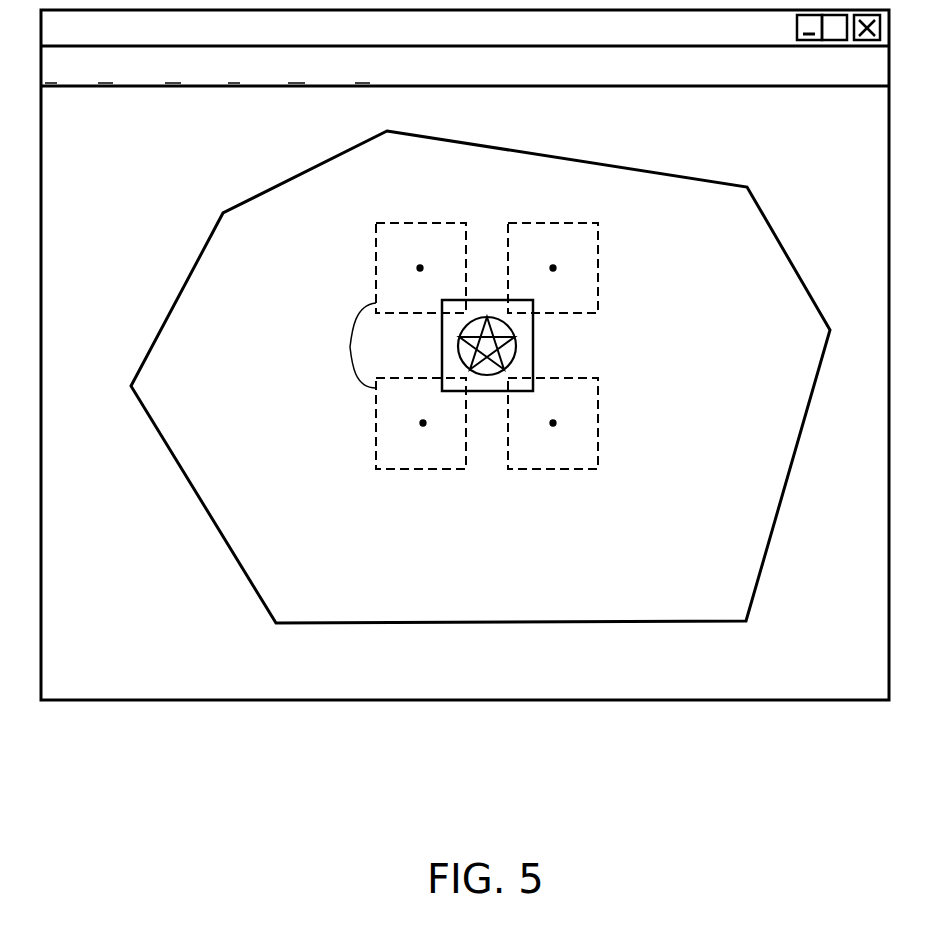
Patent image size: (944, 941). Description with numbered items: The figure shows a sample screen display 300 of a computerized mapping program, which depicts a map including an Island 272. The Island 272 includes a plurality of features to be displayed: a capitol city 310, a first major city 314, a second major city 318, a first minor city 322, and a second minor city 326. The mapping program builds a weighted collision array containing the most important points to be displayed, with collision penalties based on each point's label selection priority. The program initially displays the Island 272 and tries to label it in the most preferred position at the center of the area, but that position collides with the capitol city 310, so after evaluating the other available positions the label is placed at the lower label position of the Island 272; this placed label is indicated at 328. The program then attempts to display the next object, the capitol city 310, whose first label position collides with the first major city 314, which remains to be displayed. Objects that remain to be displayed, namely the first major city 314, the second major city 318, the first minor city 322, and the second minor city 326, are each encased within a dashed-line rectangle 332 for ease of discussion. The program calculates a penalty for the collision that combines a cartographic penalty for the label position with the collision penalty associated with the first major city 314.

The screen display 300 is at (343, 776).
The Island 272 is at (630, 623).
The island label 328 is at (623, 533).
The capitol city 310 is at (486, 317).
The first major city 314 is at (553, 268).
The second major city 318 is at (553, 423).
The first minor city 322 is at (420, 268).
The second minor city 326 is at (423, 423).
The dashed-line rectangle 332 is at (350, 347).